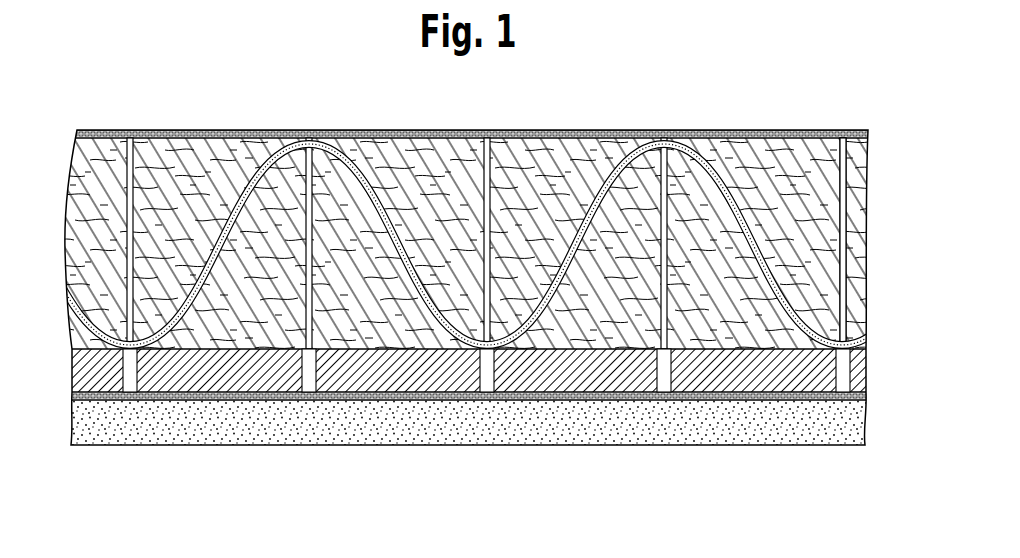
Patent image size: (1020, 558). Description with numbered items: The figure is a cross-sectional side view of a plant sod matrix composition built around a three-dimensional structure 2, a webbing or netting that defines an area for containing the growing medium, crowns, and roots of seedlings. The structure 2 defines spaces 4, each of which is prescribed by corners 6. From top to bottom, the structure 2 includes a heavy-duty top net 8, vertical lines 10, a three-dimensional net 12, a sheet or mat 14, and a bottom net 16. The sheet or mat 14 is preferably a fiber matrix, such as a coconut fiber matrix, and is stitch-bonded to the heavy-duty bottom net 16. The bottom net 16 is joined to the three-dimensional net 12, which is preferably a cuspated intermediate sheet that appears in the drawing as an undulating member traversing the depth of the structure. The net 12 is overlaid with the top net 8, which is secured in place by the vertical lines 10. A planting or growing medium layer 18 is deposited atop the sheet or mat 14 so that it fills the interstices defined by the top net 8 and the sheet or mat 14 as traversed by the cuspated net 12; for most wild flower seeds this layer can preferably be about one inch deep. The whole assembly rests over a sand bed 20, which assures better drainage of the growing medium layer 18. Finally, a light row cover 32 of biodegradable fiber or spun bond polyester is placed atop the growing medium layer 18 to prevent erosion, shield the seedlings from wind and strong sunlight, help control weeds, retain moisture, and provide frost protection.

The three-dimensional structure 2 is at (803, 75).
The spaces 4 is at (187, 188).
The corners 6 is at (505, 158).
The top net 8 is at (85, 131).
The vertical lines 10 is at (706, 155).
The three-dimensional net 12 is at (612, 165).
The sheet or mat 14 is at (866, 377).
The bottom net 16 is at (835, 433).
The planting or growing medium layer 18 is at (262, 300).
The sand bed 20 is at (797, 425).
The row cover 32 is at (843, 132).